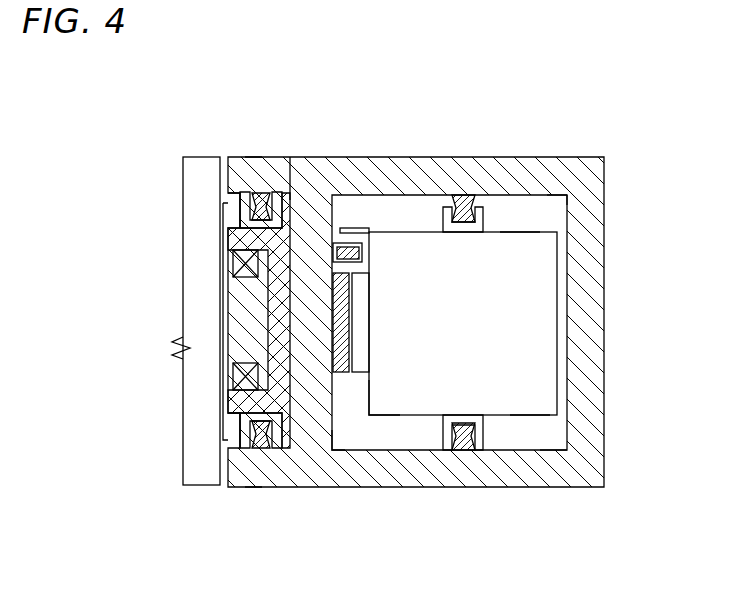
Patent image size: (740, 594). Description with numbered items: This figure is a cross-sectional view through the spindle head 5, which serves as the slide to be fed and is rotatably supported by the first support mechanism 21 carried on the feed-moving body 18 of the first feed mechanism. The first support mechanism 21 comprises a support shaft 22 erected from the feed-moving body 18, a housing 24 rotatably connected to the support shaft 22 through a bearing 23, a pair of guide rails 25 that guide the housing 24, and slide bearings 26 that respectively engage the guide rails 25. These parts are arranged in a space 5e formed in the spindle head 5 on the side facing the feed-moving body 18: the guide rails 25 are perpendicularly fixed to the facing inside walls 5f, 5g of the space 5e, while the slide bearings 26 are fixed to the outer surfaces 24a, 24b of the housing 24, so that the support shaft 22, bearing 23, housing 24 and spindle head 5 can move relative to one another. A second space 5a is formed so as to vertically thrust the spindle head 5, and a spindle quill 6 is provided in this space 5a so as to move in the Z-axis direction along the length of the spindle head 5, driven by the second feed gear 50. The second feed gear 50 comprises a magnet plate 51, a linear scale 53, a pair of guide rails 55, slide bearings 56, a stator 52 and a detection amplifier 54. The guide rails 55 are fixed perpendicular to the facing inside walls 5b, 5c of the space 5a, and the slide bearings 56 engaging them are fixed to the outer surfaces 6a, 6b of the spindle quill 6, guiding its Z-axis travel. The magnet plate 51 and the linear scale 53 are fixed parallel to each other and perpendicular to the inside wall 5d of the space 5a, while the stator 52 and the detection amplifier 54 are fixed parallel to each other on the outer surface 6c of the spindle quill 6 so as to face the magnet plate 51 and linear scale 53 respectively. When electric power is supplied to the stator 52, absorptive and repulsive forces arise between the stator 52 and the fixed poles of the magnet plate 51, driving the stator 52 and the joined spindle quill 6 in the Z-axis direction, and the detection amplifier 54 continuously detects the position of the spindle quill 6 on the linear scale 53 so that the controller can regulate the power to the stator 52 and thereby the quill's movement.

The spindle head 5 is at (598, 373).
The space 5a is at (547, 222).
The inside wall 5b is at (577, 203).
The inside wall 5c is at (543, 448).
The inside wall 5d is at (335, 427).
The space 5e is at (290, 157).
The inside wall 5f is at (193, 157).
The inside wall 5g is at (294, 450).
The spindle quill 6 is at (547, 322).
The outer surface 6a is at (520, 230).
The outer surface 6b is at (530, 417).
The outer surface 6c is at (358, 395).
The feed-moving body 18 is at (195, 258).
The first support mechanism 21 is at (203, 358).
The support shaft 22 is at (225, 337).
The bearing 23 is at (233, 272).
The housing 24 is at (287, 435).
The outer surface 24a is at (242, 217).
The outer surface 24b is at (242, 423).
The guide rail 25 is at (253, 157).
The slide bearing 26 is at (248, 214).
The second feed gear 50 is at (418, 112).
The magnet plate 51 is at (347, 338).
The stator 52 is at (367, 293).
The linear scale 53 is at (342, 228).
The detection amplifier 54 is at (356, 243).
The guide rail 55 is at (460, 195).
The slide bearing 56 is at (483, 207).